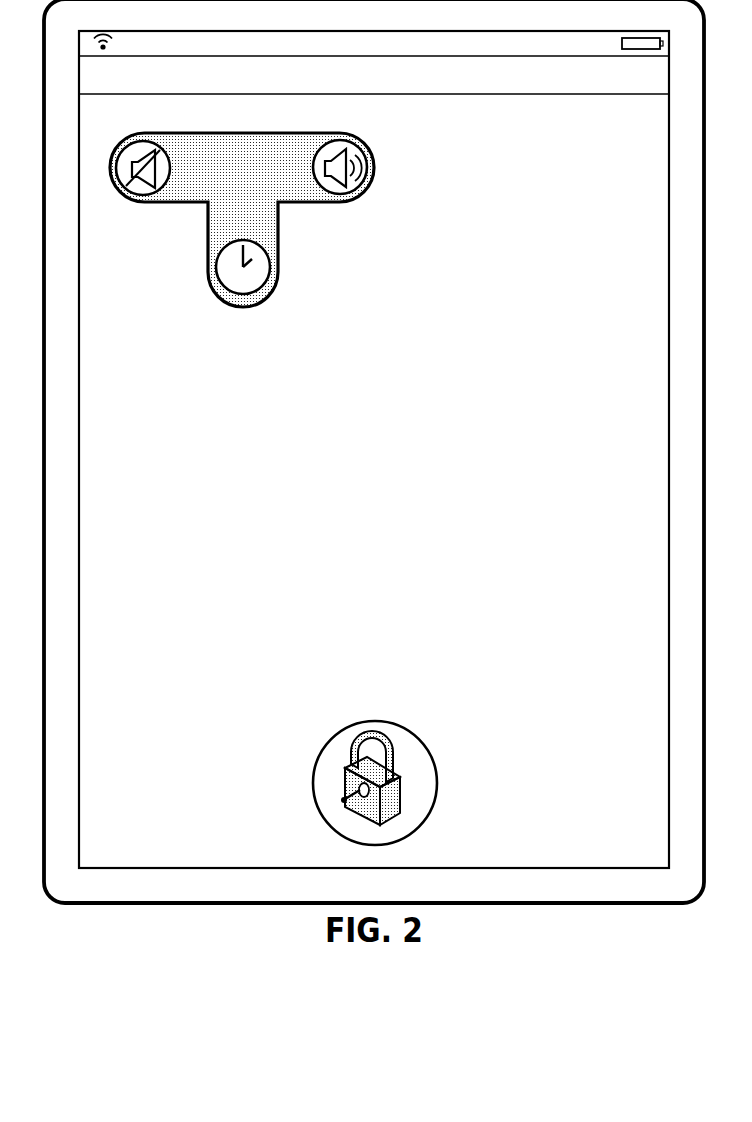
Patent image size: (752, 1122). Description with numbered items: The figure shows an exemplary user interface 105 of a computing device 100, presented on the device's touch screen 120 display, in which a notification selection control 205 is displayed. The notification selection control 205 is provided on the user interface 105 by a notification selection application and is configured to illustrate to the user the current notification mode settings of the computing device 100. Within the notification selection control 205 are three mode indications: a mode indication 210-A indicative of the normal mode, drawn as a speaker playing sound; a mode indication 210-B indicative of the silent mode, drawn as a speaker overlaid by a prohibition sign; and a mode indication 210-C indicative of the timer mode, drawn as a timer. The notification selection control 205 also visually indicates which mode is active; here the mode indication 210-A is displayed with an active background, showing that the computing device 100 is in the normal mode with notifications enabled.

The computing device 100 is at (548, 908).
The user interface 105 is at (587, 835).
The touch screen 120 is at (210, 870).
The notification selection control 205 is at (236, 128).
The mode indication 210-A is at (355, 212).
The mode indication 210-B is at (138, 208).
The mode indication 210-C is at (264, 312).